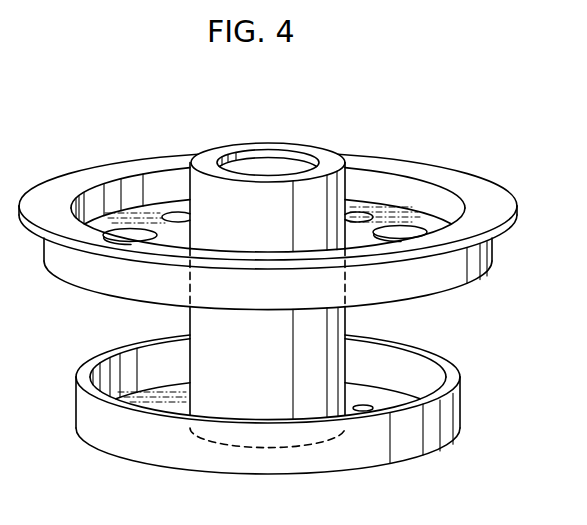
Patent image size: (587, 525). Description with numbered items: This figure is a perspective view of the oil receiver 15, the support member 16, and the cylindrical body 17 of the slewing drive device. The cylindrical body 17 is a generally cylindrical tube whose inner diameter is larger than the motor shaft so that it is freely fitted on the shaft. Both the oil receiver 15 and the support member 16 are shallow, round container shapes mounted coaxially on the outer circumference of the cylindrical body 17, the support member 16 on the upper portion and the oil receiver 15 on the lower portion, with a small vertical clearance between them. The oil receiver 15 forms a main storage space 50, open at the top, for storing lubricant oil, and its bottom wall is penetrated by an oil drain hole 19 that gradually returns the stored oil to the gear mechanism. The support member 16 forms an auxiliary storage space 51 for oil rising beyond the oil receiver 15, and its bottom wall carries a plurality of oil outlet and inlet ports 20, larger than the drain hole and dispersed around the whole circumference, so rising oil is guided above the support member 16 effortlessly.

The oil receiver 15 is at (412, 458).
The support member 16 is at (473, 262).
The cylindrical body 17 is at (326, 148).
The oil drain hole 19 is at (366, 405).
The oil outlet and inlet ports 20 is at (134, 232).
The main storage space 50 is at (128, 377).
The auxiliary storage space 51 is at (414, 190).